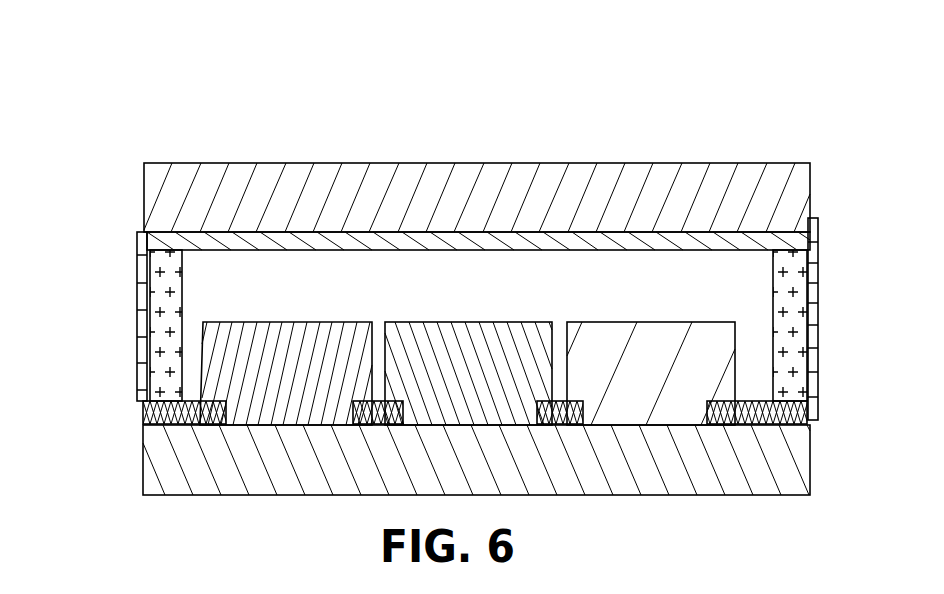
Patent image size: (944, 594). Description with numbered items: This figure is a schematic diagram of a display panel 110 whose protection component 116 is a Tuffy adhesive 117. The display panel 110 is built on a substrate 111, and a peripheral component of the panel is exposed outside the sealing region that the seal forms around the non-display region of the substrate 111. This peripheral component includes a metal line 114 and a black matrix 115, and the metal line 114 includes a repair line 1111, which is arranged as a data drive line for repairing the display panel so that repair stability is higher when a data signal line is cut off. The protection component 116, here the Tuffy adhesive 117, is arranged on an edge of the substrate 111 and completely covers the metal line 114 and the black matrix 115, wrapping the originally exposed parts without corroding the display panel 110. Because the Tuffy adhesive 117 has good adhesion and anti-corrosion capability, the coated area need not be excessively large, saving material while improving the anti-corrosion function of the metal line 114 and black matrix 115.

The display panel 110 is at (373, 153).
The metal line 114 is at (421, 278).
The repair line 1111 is at (202, 240).
The protection component 116 is at (425, 314).
The Tuffy adhesive 117 is at (143, 255).
The black matrix 115 is at (142, 392).
The substrate 111 is at (803, 175).